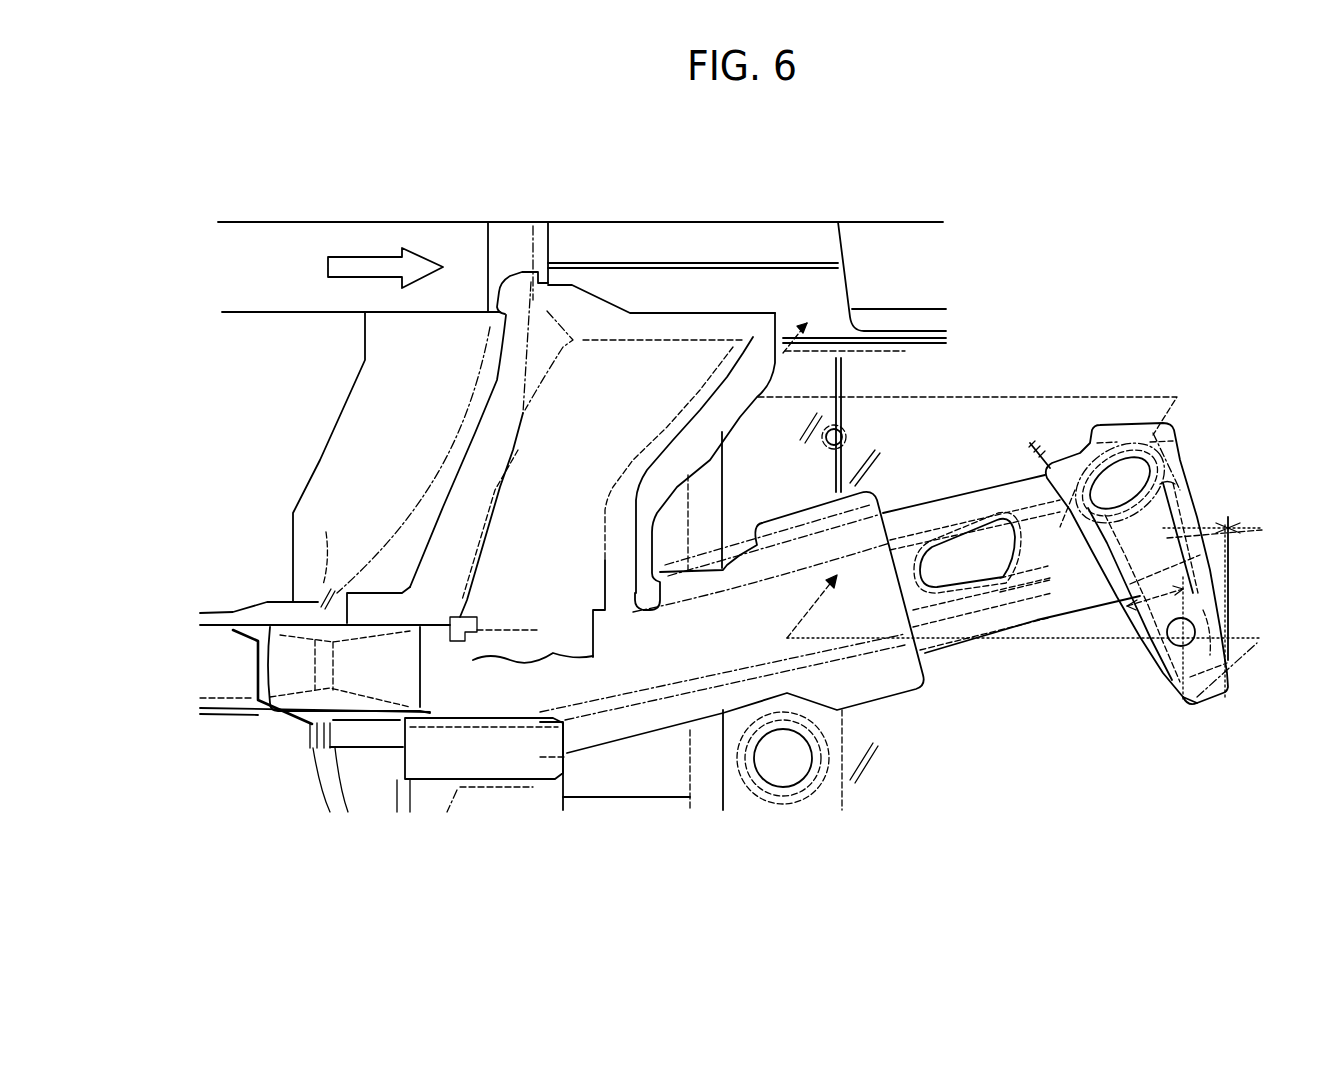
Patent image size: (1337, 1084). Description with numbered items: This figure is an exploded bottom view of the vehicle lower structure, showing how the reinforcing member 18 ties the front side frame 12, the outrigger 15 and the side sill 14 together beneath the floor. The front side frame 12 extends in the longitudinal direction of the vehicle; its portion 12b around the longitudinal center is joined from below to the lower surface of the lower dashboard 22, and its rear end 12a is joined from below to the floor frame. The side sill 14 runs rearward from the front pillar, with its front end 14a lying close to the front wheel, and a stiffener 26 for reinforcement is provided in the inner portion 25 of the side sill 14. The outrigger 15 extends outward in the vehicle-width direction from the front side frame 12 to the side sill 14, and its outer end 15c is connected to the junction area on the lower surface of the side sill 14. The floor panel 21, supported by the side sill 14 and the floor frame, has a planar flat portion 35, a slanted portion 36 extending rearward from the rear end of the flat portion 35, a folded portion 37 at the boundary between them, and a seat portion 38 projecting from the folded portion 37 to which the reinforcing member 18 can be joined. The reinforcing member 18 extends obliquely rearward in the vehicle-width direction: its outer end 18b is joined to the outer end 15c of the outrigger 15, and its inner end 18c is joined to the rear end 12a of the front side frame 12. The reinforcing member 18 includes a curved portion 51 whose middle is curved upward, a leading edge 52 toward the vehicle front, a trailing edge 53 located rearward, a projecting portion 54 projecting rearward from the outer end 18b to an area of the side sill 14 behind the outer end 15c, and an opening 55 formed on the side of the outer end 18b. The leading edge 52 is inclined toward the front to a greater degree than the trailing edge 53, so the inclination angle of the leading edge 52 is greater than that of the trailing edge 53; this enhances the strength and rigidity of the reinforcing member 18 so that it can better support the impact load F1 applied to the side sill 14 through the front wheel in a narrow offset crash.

The impact load F1 is at (358, 265).
The front side frame 12 is at (290, 697).
The rear end of the front side frame 12a is at (850, 580).
The portion of the front side frame 12b is at (403, 700).
The side sill 14 is at (810, 233).
The front end of the side sill 14a is at (557, 237).
The outrigger 15 is at (543, 460).
The outer end of the outrigger 15c is at (753, 335).
The reinforcing member 18 is at (1030, 443).
The outer end of the reinforcing member 18b is at (1084, 462).
The inner end of the reinforcing member 18c is at (1192, 710).
The floor panel 21 is at (768, 440).
The lower dashboard 22 is at (315, 486).
The inner portion of the side sill 25 is at (920, 276).
The stiffener 26 is at (935, 316).
The flat portion 35 is at (800, 478).
The slanted portion 36 is at (890, 487).
The folded portion 37 is at (845, 405).
The seat portion 38 is at (848, 438).
The curved portion 51 is at (1122, 598).
The leading edge 52 is at (1098, 568).
The trailing edge 53 is at (1188, 468).
The projecting portion 54 is at (1183, 430).
The opening 55 is at (1090, 522).